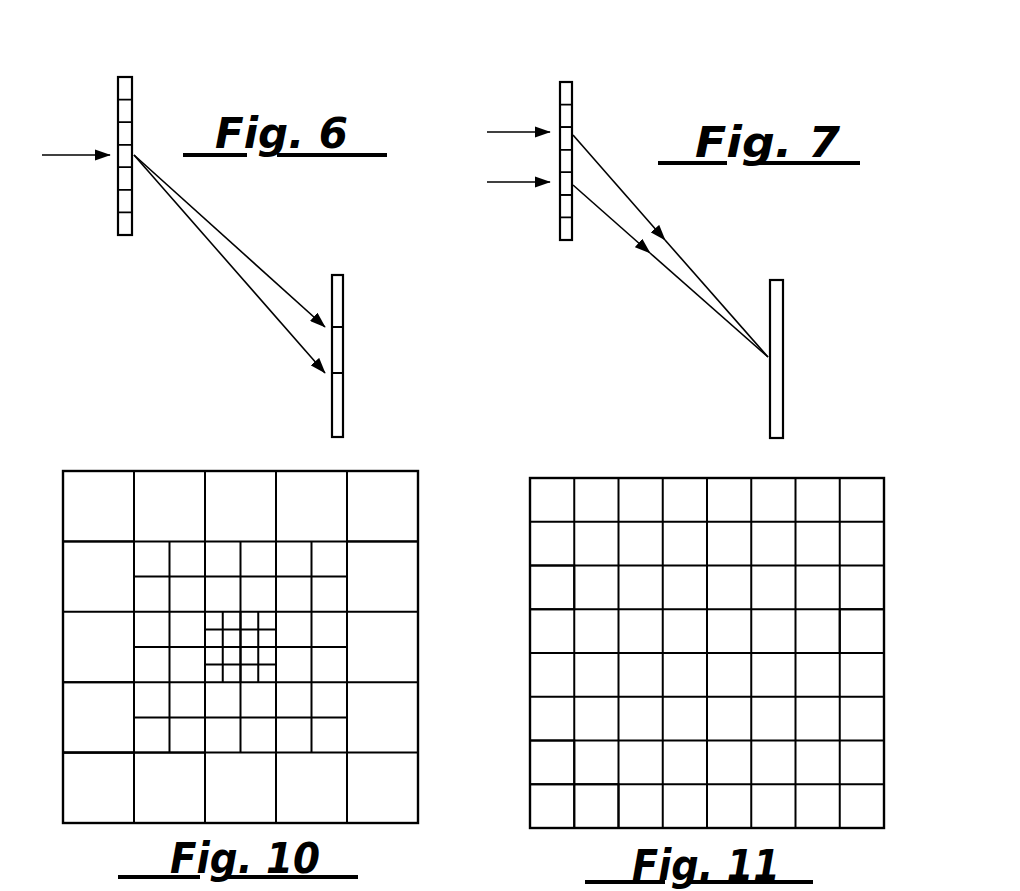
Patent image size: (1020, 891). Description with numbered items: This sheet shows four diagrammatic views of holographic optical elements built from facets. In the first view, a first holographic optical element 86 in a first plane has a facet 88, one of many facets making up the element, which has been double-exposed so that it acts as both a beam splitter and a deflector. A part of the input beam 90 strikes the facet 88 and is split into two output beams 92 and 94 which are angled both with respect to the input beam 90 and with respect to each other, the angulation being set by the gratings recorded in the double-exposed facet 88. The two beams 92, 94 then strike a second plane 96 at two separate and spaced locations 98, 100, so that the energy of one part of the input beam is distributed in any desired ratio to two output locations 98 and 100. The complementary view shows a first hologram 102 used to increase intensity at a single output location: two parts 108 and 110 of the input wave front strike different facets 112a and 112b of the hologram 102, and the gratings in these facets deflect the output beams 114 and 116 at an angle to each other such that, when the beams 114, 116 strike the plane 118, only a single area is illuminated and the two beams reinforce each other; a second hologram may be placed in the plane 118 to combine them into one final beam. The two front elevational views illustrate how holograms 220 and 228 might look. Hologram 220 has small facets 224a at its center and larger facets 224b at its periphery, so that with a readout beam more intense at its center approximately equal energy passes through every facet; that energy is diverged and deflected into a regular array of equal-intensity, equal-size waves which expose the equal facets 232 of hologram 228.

In FIG. 6, the first holographic optical element 86 is at (118, 87).
In FIG. 6, the facet 88 is at (133, 148).
In FIG. 6, the input beam 90 is at (52, 157).
In FIG. 6, the output beam 92 is at (232, 240).
In FIG. 6, the output beam 94 is at (262, 305).
In FIG. 6, the second plane 96 is at (343, 283).
In FIG. 6, the output location 98 is at (343, 327).
In FIG. 6, the output location 100 is at (343, 373).
In FIG. 7, the first hologram 102 is at (558, 72).
In FIG. 7, the part of input wave front 108 is at (508, 131).
In FIG. 7, the part of input wave front 110 is at (505, 182).
In FIG. 7, the facet 112a is at (558, 133).
In FIG. 7, the facet 112b is at (557, 183).
In FIG. 7, the output beam 114 is at (640, 207).
In FIG. 7, the output beam 116 is at (687, 288).
In FIG. 7, the plane 118 is at (768, 362).
In FIG. 10, the hologram 220 is at (170, 470).
In FIG. 10, the small facets 224a is at (247, 623).
In FIG. 10, the larger facets 224b is at (92, 490).
In FIG. 11, the hologram 228 is at (593, 477).
In FIG. 11, the facets 232 is at (547, 593).